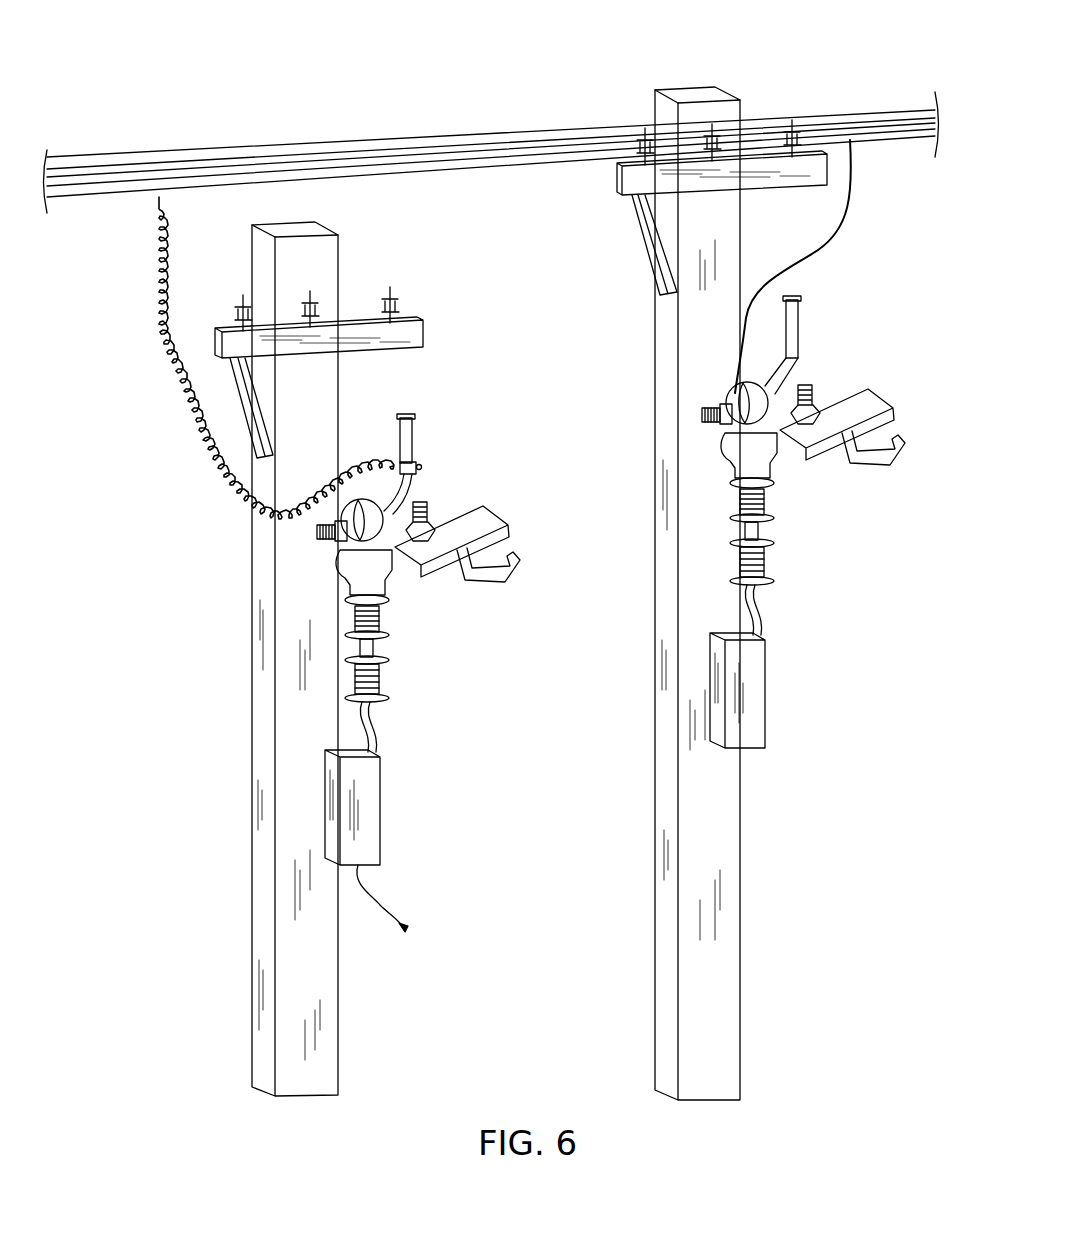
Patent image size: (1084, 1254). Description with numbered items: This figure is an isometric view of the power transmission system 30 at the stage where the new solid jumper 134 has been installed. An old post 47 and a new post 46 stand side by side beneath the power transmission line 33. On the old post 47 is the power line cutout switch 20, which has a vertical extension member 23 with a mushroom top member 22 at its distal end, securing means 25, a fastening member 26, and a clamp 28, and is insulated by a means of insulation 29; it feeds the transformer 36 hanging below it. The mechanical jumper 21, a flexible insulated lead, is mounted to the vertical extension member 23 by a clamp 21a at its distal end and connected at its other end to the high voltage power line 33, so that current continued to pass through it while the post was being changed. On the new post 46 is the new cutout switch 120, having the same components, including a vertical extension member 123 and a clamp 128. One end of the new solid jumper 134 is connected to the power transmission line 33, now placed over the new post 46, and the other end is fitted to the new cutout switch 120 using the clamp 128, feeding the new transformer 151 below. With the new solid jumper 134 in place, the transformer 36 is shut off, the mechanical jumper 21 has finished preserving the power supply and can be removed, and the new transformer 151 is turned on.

The power transmission system 30 is at (456, 64).
The power transmission line 33 is at (521, 178).
The old post 47 is at (276, 790).
The new post 46 is at (703, 760).
The mechanical jumper 21 is at (203, 452).
The clamp 21a is at (419, 471).
The power line cutout switch 20 is at (530, 418).
The mushroom top member 22 is at (411, 412).
The vertical extension member 23 is at (415, 470).
The securing means 25 is at (438, 502).
The fastening member 26 is at (318, 532).
The clamp 28 is at (345, 560).
The means of insulation 29 is at (383, 678).
The transformer 36 is at (372, 822).
The new cutout switch 120 is at (897, 288).
The vertical extension member 123 is at (800, 340).
The new solid jumper 134 is at (855, 192).
The clamp 128 is at (735, 452).
The new transformer 151 is at (757, 716).